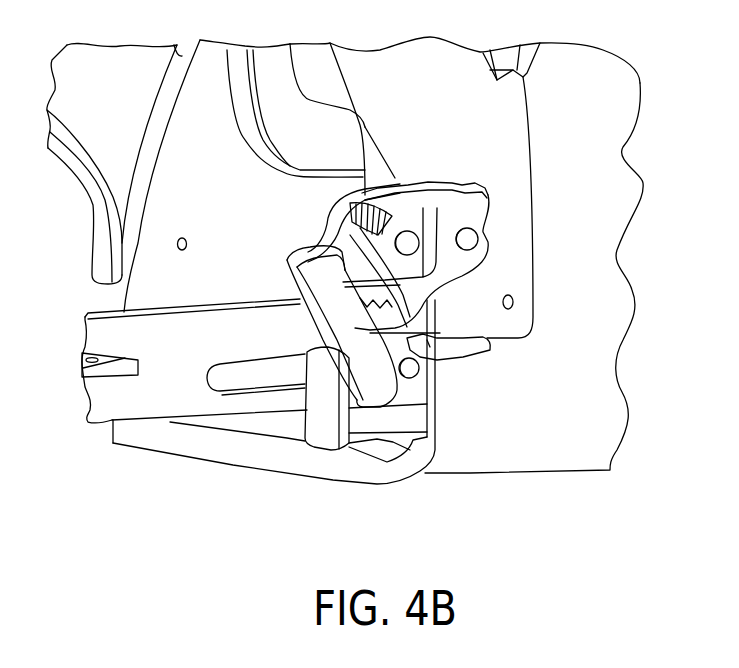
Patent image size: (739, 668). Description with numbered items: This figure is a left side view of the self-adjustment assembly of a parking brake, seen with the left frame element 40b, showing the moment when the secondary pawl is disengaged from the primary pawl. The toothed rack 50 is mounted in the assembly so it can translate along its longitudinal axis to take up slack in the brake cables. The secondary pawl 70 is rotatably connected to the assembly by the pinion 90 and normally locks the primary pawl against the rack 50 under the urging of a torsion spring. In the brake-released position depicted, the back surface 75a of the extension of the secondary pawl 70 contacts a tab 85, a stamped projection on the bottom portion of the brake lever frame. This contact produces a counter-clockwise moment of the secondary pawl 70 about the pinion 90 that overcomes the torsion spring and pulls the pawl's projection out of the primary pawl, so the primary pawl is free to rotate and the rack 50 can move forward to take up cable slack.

The left frame element 40b is at (538, 458).
The toothed rack 50 is at (193, 320).
The secondary pawl 70 is at (365, 195).
The back surface of the extension 75a is at (323, 332).
The tab 85 is at (317, 430).
The pinion 90 is at (412, 245).